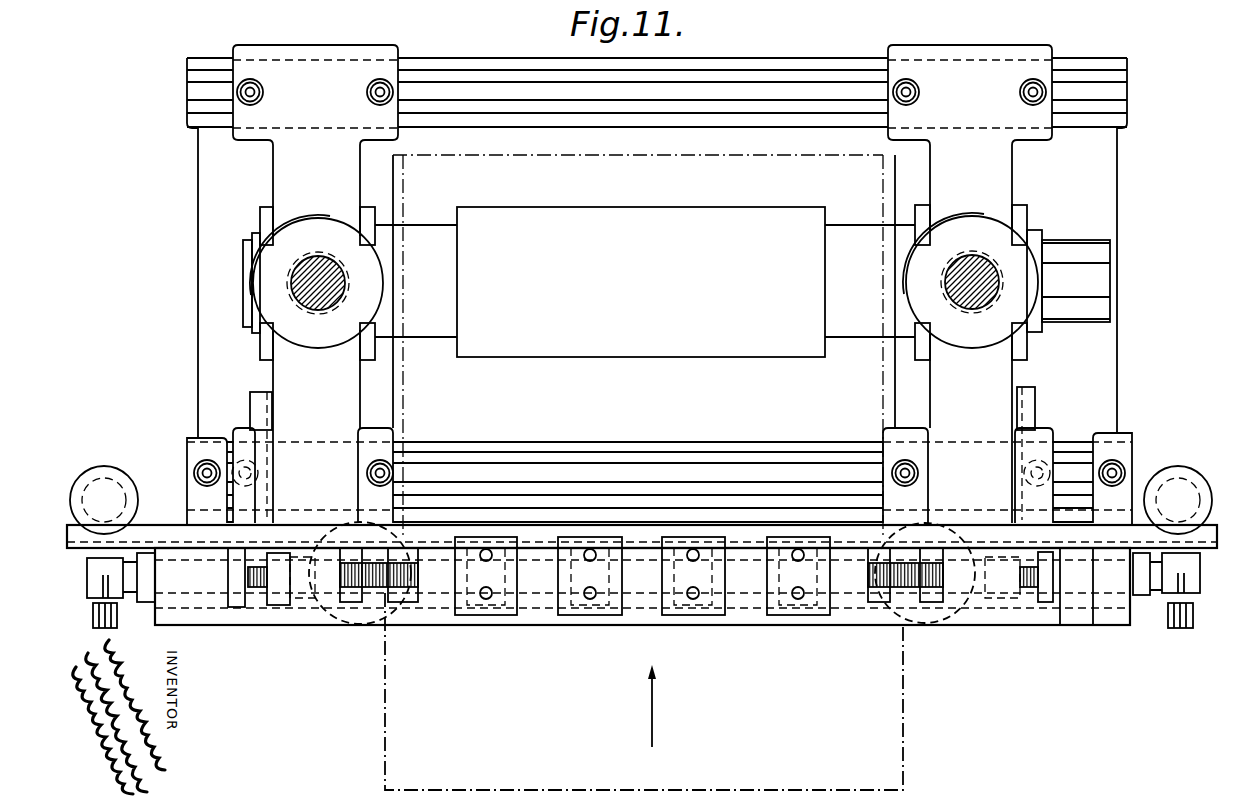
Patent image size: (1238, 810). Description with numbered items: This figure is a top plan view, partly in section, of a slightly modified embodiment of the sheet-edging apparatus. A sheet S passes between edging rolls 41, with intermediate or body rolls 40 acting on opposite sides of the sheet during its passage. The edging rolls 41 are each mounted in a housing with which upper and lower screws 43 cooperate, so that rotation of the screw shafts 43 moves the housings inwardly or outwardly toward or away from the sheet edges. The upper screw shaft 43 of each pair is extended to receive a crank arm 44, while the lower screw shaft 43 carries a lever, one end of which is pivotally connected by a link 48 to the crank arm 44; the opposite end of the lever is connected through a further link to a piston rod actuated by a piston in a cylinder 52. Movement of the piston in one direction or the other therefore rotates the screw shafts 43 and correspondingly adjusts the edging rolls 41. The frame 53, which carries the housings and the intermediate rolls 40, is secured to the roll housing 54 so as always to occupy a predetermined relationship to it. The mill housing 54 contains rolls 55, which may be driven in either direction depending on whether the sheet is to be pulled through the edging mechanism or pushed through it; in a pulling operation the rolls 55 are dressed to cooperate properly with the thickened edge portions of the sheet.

The intermediate or body rolls 40 is at (558, 562).
The edging rolls 41 is at (363, 628).
The screw shaft 43 is at (253, 615).
The crank arm 44 is at (103, 600).
The link 48 is at (118, 617).
The cylinder 52 is at (104, 468).
The frame 53 is at (651, 565).
The roll housing 54 is at (285, 176).
The rolls 55 is at (627, 209).
The sheet S is at (903, 707).